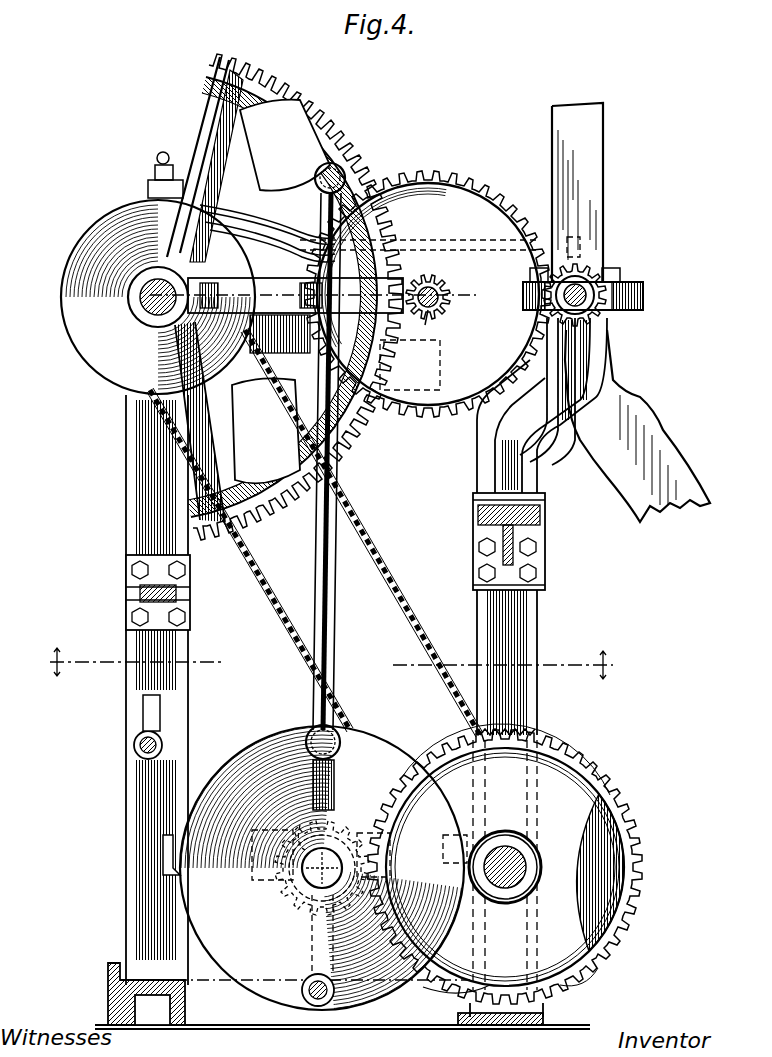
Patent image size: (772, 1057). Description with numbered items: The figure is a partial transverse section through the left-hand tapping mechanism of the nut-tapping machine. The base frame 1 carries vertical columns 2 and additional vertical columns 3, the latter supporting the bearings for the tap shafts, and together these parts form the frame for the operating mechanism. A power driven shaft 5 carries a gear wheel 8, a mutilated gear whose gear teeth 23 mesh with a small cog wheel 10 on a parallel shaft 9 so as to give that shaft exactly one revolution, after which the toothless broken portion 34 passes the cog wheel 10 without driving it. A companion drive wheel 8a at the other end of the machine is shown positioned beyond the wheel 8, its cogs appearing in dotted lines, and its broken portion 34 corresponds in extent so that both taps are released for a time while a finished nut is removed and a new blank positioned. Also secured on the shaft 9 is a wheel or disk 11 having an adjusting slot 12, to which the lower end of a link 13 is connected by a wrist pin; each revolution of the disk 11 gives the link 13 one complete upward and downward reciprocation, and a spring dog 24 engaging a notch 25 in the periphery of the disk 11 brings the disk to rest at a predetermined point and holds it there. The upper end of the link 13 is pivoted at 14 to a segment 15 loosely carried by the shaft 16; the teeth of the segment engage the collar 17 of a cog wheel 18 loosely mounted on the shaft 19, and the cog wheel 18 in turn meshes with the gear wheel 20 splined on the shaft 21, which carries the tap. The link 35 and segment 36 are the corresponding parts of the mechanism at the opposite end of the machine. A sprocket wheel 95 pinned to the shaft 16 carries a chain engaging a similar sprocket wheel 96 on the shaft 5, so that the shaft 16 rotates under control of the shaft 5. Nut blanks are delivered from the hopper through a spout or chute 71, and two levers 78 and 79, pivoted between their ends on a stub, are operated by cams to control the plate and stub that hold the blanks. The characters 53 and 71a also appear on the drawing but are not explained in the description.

The base frame 1 is at (108, 990).
The vertical columns 2 is at (130, 530).
The additional vertical columns 3 is at (332, 663).
The power driven shaft 5 is at (512, 878).
The gear wheel 8 is at (558, 800).
The drive wheel 8a is at (607, 853).
The shaft 9 is at (305, 883).
The cog wheel 10 is at (343, 812).
The wheel or disk 11 is at (240, 765).
The adjusting slot 12 is at (338, 745).
The link 13 is at (337, 597).
The pivotal connection 14 is at (337, 180).
The segment 15 is at (205, 120).
The shaft 16 is at (140, 280).
The collar 17 is at (432, 285).
The cog wheel 18 is at (450, 200).
The shaft 19 is at (425, 325).
The gear wheel 20 is at (588, 280).
The shaft 21 is at (612, 290).
The gear teeth 23 is at (525, 738).
The spring dog 24 is at (162, 792).
The notch 25 is at (175, 870).
The broken portions 34 is at (423, 987).
The link 35 is at (300, 825).
The segment 36 is at (360, 440).
The gear rim 53 is at (592, 776).
The spout or chute 71 is at (590, 190).
The arm 71a is at (663, 433).
The lever 78 is at (243, 207).
The lever 79 is at (300, 228).
The sprocket wheel 95 is at (137, 222).
The sprocket wheel 96 is at (598, 968).